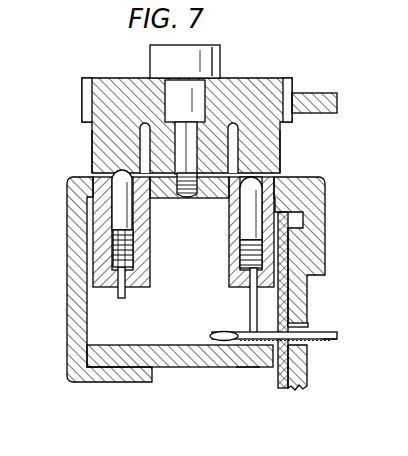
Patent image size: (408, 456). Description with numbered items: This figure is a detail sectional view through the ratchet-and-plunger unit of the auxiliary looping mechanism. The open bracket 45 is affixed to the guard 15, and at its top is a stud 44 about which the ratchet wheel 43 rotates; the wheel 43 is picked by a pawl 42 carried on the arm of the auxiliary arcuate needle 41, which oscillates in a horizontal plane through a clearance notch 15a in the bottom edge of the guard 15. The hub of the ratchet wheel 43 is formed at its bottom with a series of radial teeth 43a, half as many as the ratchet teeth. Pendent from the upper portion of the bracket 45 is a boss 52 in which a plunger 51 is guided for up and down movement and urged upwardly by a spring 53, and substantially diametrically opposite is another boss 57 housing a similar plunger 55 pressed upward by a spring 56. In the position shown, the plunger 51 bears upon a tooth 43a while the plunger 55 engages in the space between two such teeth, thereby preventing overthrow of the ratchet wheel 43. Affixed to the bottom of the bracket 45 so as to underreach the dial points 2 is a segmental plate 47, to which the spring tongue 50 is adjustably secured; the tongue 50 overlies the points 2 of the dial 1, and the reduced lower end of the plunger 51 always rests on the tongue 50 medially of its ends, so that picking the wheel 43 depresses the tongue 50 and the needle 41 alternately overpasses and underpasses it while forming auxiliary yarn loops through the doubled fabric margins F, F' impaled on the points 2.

The dial 1 is at (297, 390).
The points 2 is at (248, 366).
The guard 15 is at (290, 264).
The clearance notch 15a is at (308, 325).
The auxiliary arcuate needle 41 is at (322, 339).
The pawl 42 is at (320, 96).
The ratchet wheel 43 is at (100, 90).
The radial teeth 43a is at (100, 148).
The stud 44 is at (222, 55).
The open bracket 45 is at (77, 302).
The segmental plate 47 is at (185, 355).
The spring tongue 50 is at (228, 342).
The plunger 51 is at (250, 303).
The boss 52 is at (229, 228).
The spring 53 is at (252, 258).
The plunger 55 is at (117, 208).
The spring 56 is at (133, 245).
The boss 57 is at (150, 212).
The half portion of the edge margin F is at (272, 416).
The half portion of the edge margin F' is at (248, 415).